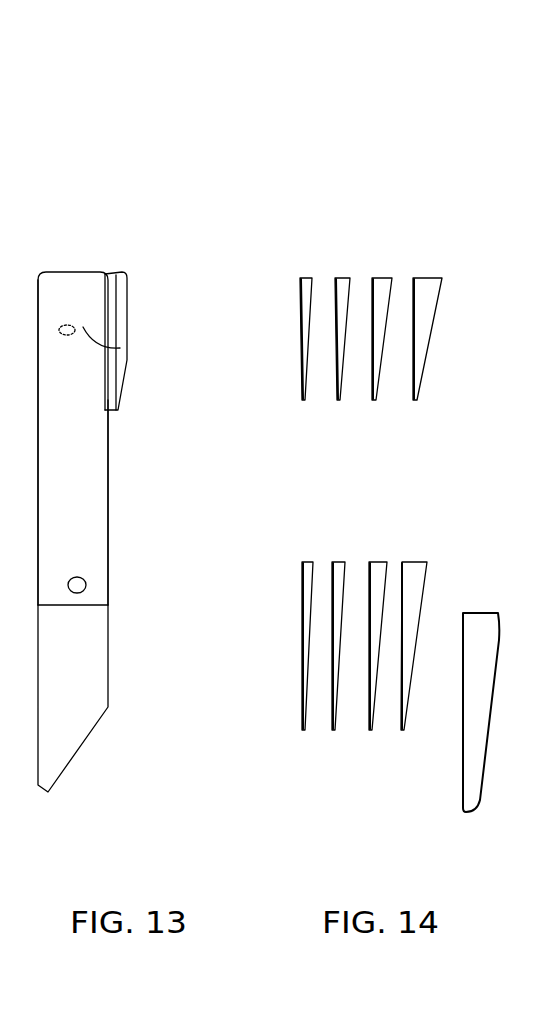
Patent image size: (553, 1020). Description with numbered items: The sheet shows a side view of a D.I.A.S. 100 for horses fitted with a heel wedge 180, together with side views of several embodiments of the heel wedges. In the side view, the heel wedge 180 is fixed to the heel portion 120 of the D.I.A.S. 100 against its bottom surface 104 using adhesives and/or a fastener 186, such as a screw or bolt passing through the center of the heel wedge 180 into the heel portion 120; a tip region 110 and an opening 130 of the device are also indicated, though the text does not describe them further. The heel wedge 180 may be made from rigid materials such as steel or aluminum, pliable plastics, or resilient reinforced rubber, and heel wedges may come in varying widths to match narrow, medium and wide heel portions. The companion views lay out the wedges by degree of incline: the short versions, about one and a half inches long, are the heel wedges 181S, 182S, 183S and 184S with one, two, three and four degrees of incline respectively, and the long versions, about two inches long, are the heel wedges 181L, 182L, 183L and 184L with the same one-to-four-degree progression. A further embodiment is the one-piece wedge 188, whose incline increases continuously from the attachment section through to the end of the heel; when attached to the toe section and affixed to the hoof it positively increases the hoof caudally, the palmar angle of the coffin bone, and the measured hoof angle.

In FIG. 13, the D.I.A.S. 100 is at (167, 750).
In FIG. 13, the bottom surface 104 is at (110, 505).
In FIG. 13, the tip portion 110 is at (72, 632).
In FIG. 13, the heel portion 120 is at (65, 465).
In FIG. 13, the aperture 130 is at (73, 565).
In FIG. 13, the heel wedge 180 is at (115, 297).
In FIG. 14, the heel wedge 180 is at (378, 750).
In FIG. 13, the fastener 186 is at (120, 348).
In FIG. 14, the short heel wedge with one degree of incline 181S is at (304, 276).
In FIG. 14, the short heel wedge with two degrees of incline 182S is at (339, 276).
In FIG. 14, the short heel wedge with three degrees of incline 183S is at (383, 276).
In FIG. 14, the short heel wedge with four degrees of incline 184S is at (425, 276).
In FIG. 14, the long heel wedge with one degree of incline 181L is at (305, 560).
In FIG. 14, the long heel wedge with two degrees of incline 182L is at (338, 560).
In FIG. 14, the long heel wedge with three degrees of incline 183L is at (382, 560).
In FIG. 14, the long heel wedge with four degrees of incline 184L is at (411, 560).
In FIG. 14, the one-piece wedge 188 is at (478, 612).